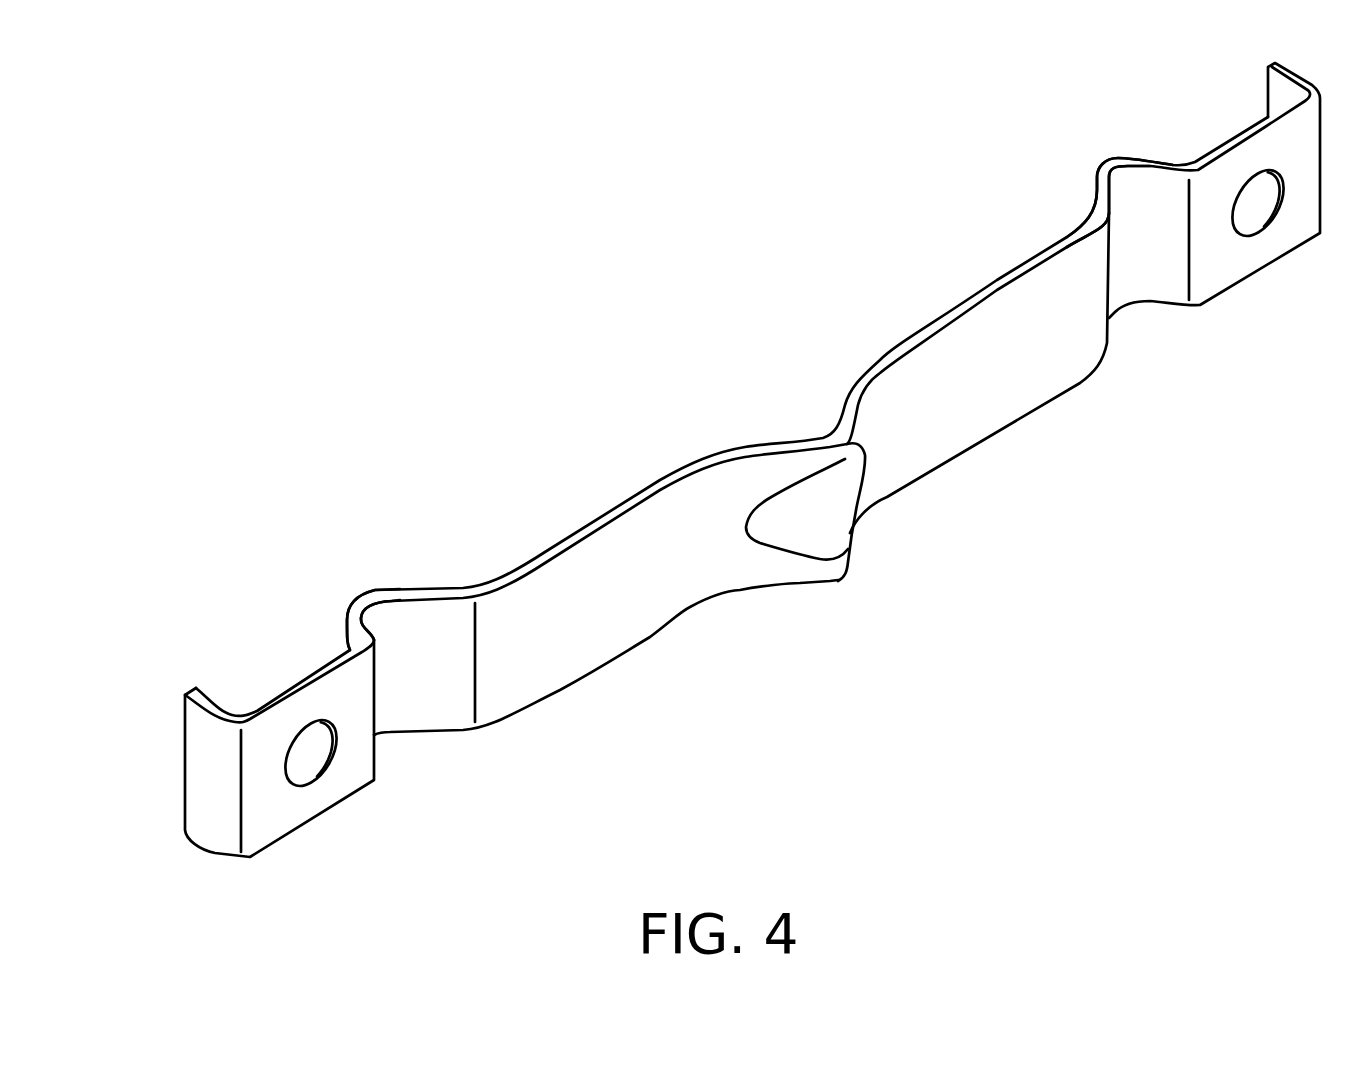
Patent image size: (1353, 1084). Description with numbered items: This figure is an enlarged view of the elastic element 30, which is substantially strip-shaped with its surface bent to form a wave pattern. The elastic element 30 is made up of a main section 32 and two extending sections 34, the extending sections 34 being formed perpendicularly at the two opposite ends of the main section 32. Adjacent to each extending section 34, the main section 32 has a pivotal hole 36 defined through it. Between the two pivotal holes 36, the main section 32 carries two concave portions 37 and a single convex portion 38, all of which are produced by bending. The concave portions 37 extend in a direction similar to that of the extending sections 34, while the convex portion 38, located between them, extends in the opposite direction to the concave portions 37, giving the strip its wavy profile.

The elastic element 30 is at (1053, 465).
The main section 32 is at (553, 642).
The extending section 34 is at (210, 755).
The pivotal hole 36 is at (302, 760).
The concave portion 37 is at (382, 620).
The convex portion 38 is at (830, 568).